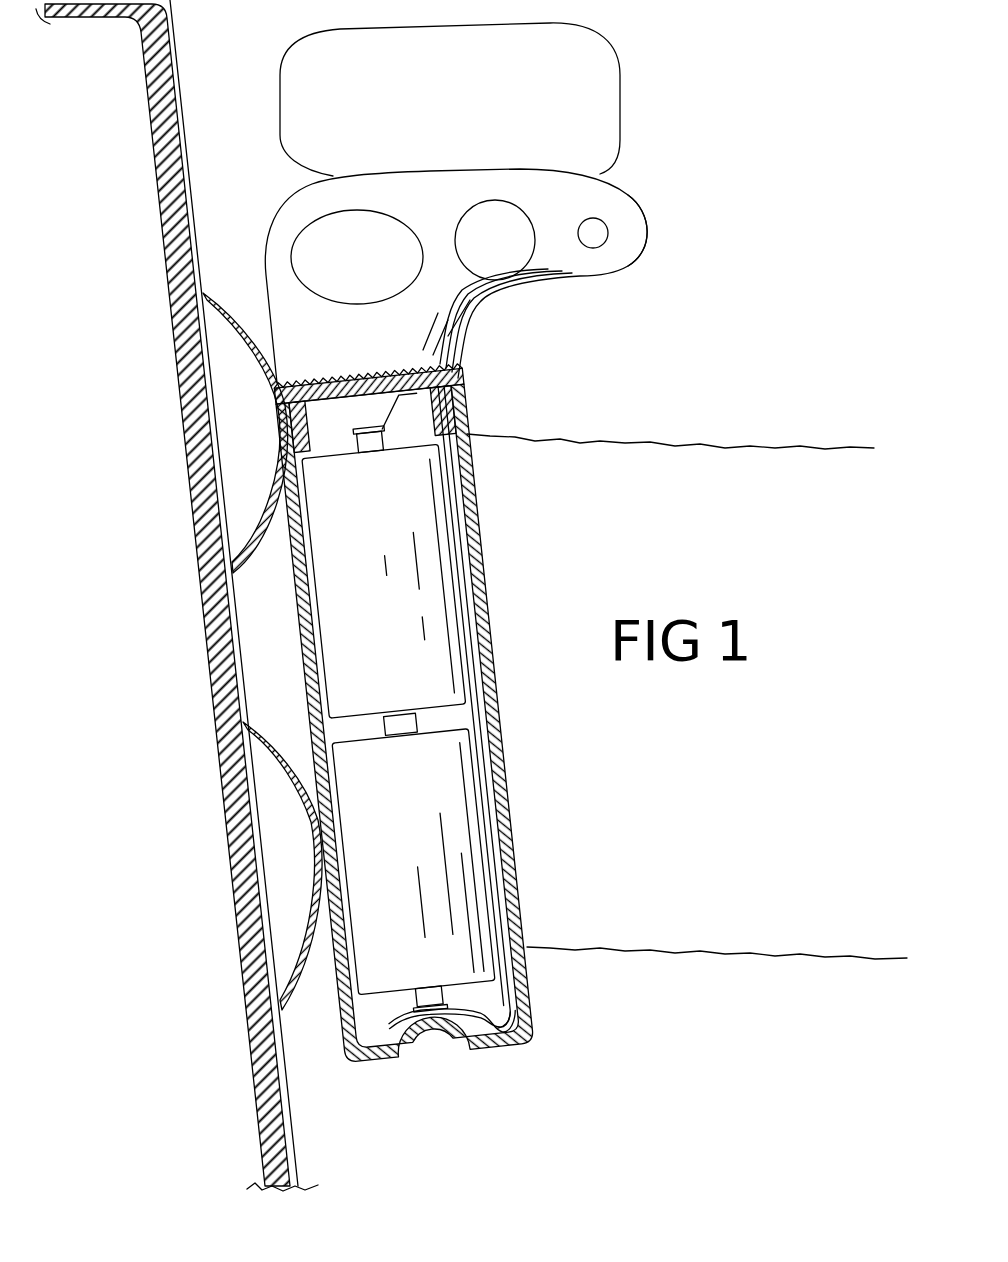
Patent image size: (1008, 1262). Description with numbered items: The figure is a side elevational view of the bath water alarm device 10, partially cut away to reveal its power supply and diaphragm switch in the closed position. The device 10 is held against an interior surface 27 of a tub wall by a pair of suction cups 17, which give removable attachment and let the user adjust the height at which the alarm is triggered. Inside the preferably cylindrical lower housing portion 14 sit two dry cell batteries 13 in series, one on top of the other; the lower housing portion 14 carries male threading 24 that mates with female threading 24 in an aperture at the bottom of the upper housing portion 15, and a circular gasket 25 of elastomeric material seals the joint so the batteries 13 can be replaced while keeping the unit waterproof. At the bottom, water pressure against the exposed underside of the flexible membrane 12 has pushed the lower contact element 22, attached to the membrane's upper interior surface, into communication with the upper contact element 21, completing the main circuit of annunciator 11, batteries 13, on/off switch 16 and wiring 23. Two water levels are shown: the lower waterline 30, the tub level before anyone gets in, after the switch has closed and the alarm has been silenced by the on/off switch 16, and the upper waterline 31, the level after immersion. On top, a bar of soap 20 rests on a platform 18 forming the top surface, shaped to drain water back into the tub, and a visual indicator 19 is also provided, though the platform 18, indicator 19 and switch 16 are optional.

The device 10 is at (470, 545).
The annunciator 11 is at (313, 262).
The flexible membrane 12 is at (463, 1023).
The battery 13 is at (390, 534).
The lower housing portion 14 is at (504, 792).
The upper housing portion 15 is at (634, 233).
The on/off switch 16 is at (481, 223).
The suction cups 17 is at (233, 572).
The platform 18 is at (604, 176).
The visual indicator 19 is at (594, 238).
The bar of soap 20 is at (616, 84).
The upper contact element 21 is at (423, 992).
The lower contact element 22 is at (417, 1008).
The wiring 23 is at (527, 978).
The threading 24 is at (456, 415).
The circular gasket 25 is at (463, 380).
The interior surface of tub wall 27 is at (200, 210).
The lower waterline 30 is at (648, 950).
The upper waterline 31 is at (590, 450).